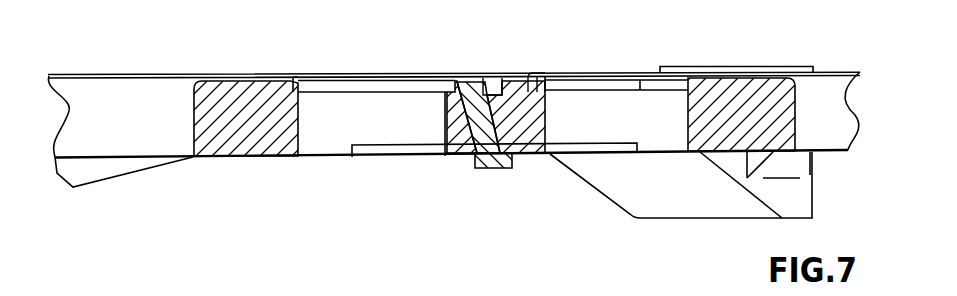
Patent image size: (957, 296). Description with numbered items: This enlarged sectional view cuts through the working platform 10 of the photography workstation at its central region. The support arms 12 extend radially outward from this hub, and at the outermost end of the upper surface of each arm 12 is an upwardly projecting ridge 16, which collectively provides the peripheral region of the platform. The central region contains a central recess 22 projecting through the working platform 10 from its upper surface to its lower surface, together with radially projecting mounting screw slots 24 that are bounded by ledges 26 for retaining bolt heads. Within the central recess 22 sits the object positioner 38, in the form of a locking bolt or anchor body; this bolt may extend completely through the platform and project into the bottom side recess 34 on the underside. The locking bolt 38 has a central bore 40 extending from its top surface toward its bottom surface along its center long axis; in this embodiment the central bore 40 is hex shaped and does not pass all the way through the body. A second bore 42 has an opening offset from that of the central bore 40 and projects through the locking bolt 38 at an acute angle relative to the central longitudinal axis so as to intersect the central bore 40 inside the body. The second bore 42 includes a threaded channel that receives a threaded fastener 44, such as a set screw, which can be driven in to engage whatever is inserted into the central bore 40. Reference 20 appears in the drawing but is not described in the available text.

The working platform 10 is at (242, 153).
The support arm 12 is at (162, 85).
The ridge 16 is at (757, 65).
The outer skin 20 is at (110, 75).
The central recess 22 is at (547, 88).
The mounting screw slot 24 is at (415, 100).
The ledge 26 is at (358, 90).
The bottom side recess 34 is at (387, 156).
The object positioner 38 is at (543, 120).
The central bore 40 is at (495, 78).
The second bore 42 is at (493, 165).
The threaded fastener 44 is at (468, 83).